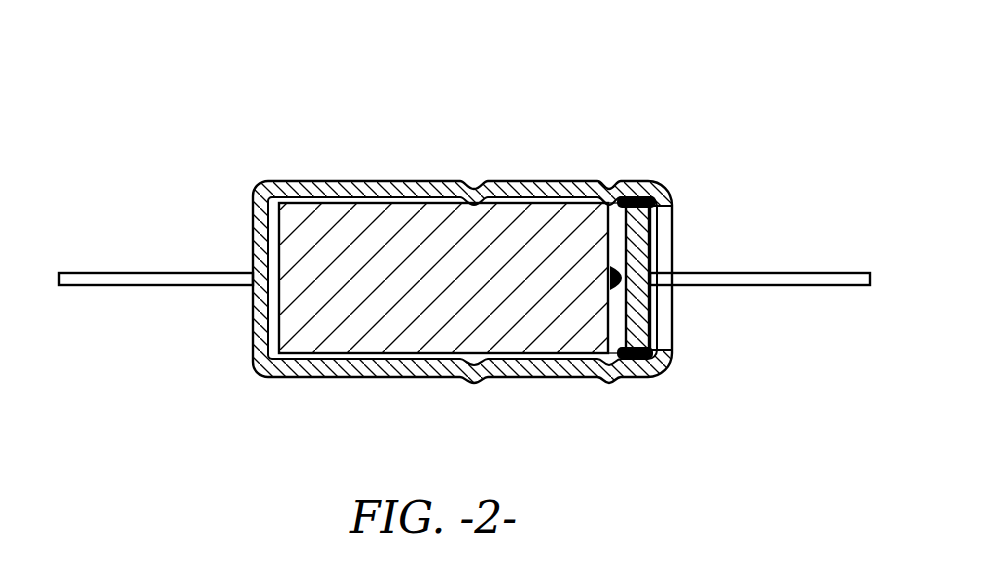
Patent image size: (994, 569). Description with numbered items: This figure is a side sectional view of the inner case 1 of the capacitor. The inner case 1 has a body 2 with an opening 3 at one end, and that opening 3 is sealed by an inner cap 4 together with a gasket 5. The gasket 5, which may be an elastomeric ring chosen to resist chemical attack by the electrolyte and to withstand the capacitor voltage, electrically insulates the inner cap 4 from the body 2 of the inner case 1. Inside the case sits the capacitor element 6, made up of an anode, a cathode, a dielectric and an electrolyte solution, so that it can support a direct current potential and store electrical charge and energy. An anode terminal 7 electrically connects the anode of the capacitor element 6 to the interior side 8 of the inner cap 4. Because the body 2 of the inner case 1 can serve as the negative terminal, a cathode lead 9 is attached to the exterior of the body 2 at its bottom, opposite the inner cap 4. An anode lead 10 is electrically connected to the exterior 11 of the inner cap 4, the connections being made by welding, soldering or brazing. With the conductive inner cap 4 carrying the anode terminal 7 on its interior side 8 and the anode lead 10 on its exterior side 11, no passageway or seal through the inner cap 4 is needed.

The inner case 1 is at (545, 148).
The body 2 is at (378, 181).
The opening 3 is at (667, 242).
The inner cap 4 is at (657, 322).
The gasket 5 is at (641, 196).
The capacitor element 6 is at (357, 324).
The anode terminal 7 is at (607, 308).
The interior side of inner cap 8 is at (617, 292).
The cathode lead 9 is at (162, 272).
The anode lead 10 is at (776, 272).
The exterior side of inner cap 11 is at (652, 293).